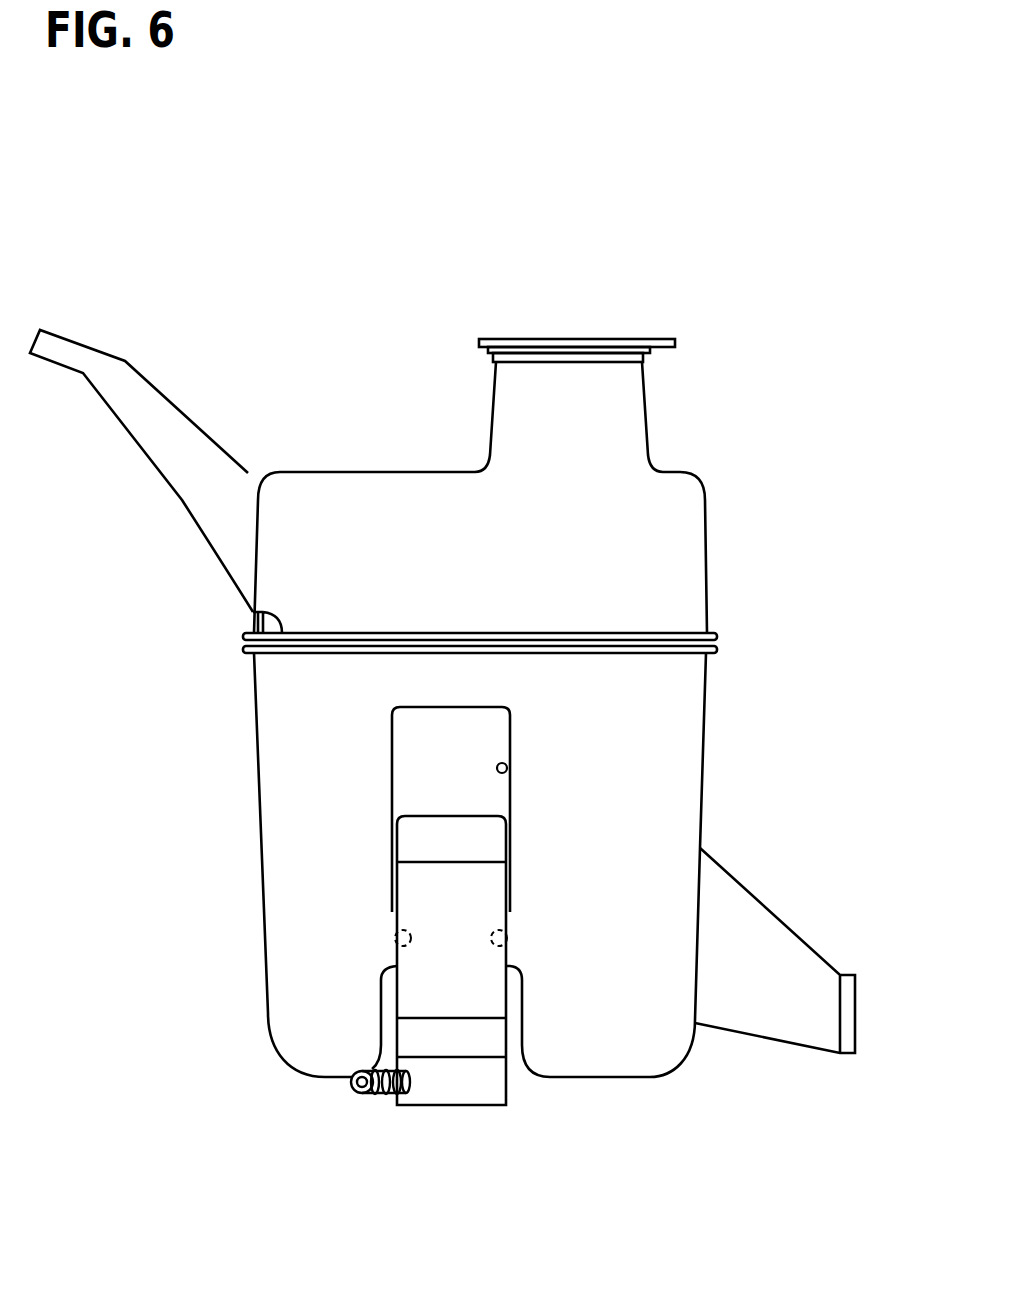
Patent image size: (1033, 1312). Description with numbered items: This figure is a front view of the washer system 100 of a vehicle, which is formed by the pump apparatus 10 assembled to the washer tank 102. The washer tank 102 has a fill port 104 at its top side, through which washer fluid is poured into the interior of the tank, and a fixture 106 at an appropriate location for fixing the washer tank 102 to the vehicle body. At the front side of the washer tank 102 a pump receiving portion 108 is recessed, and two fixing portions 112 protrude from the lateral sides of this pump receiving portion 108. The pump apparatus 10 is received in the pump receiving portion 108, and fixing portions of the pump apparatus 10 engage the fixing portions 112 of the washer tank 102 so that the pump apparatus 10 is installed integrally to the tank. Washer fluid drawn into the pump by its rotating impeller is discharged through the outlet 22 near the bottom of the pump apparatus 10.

The washer system 100 is at (381, 286).
The washer tank 102 is at (714, 741).
The fill port 104 is at (650, 420).
The fixture 106 is at (75, 340).
The pump receiving portion 108 is at (507, 769).
The pump apparatus 10 is at (447, 808).
The fixing portions 112 is at (392, 940).
The outlet 22 is at (378, 1097).